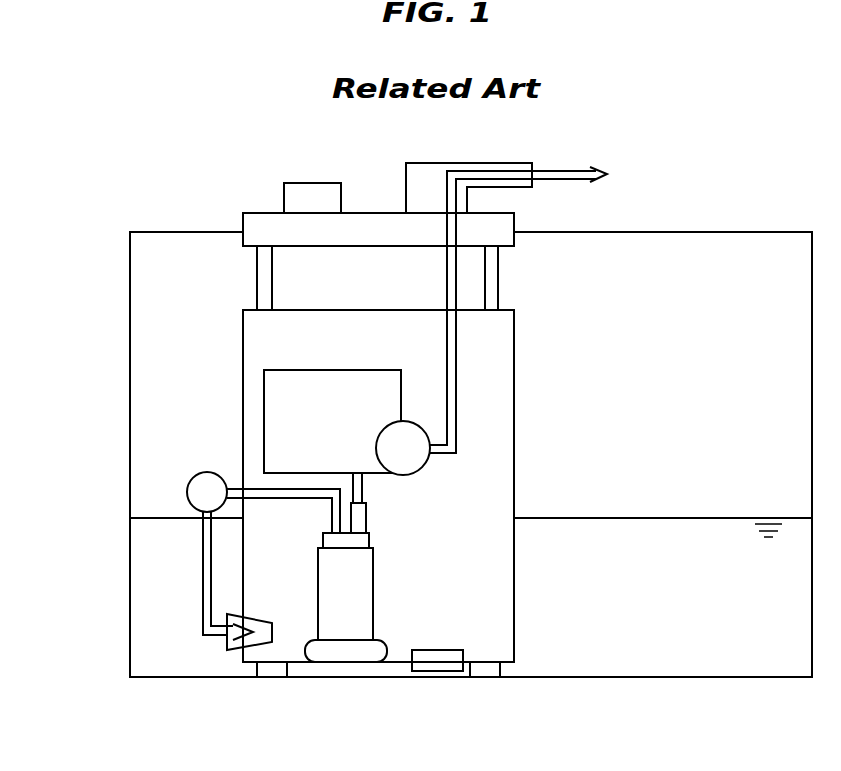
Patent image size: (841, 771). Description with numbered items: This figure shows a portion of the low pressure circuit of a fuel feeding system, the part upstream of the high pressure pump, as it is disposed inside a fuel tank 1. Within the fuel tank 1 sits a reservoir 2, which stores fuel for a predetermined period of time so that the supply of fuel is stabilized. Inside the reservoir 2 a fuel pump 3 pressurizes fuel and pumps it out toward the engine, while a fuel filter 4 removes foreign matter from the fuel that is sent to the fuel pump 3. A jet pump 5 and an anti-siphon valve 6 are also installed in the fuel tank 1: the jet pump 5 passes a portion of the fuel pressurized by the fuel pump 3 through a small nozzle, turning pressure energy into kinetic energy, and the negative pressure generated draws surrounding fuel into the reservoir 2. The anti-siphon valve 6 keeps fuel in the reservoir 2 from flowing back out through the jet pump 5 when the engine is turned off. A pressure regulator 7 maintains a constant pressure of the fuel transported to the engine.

The fuel tank 1 is at (722, 232).
The reservoir 2 is at (514, 361).
The fuel pump 3 is at (352, 610).
The fuel filter 4 is at (264, 397).
The jet pump 5 is at (235, 650).
The anti-siphon valve 6 is at (190, 486).
The pressure regulator 7 is at (422, 470).